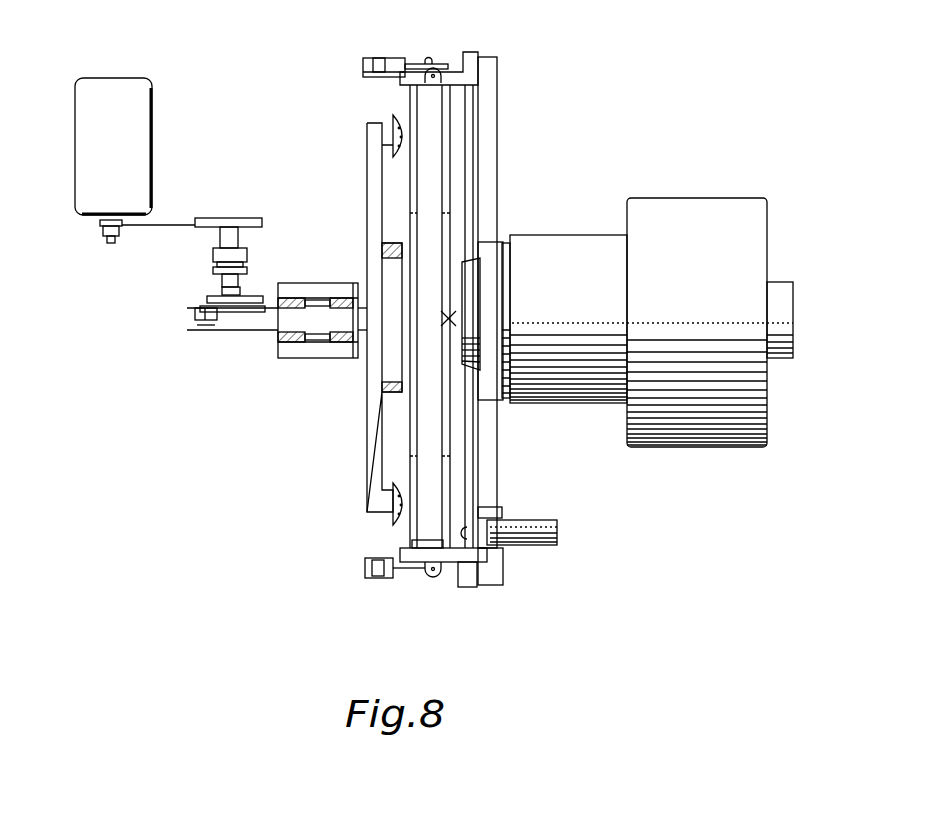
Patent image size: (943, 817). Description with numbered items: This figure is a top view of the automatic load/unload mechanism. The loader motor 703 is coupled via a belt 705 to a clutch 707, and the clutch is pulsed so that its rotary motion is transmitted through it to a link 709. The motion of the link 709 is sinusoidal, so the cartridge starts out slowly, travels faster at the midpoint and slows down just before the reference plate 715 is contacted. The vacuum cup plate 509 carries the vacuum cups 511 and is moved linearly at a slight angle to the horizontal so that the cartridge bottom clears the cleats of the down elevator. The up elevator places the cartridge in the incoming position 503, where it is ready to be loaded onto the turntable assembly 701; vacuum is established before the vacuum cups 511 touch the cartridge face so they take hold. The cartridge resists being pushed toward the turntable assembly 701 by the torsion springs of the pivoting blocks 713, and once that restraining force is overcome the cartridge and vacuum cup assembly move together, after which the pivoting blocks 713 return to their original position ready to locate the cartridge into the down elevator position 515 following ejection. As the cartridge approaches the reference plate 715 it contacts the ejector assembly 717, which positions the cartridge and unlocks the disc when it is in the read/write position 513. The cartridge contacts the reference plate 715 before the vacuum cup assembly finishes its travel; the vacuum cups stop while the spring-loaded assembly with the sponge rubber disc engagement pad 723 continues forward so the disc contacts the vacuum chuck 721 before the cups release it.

The loader motor 703 is at (150, 90).
The belt 705 is at (172, 222).
The clutch 707 is at (213, 252).
The link 709 is at (250, 300).
The incoming position 503 is at (413, 318).
The vacuum cup plate 509 is at (368, 174).
The vacuum cups 511 is at (393, 122).
The read/write position 513 is at (470, 168).
The pivoting blocks 713 is at (451, 75).
The vacuum chuck 721 is at (488, 241).
The turntable assembly 701 is at (572, 242).
The down elevator position 515 is at (448, 325).
The disc engagement pad 723 is at (392, 393).
The ejector assembly 717 is at (555, 533).
The reference plate 715 is at (497, 568).